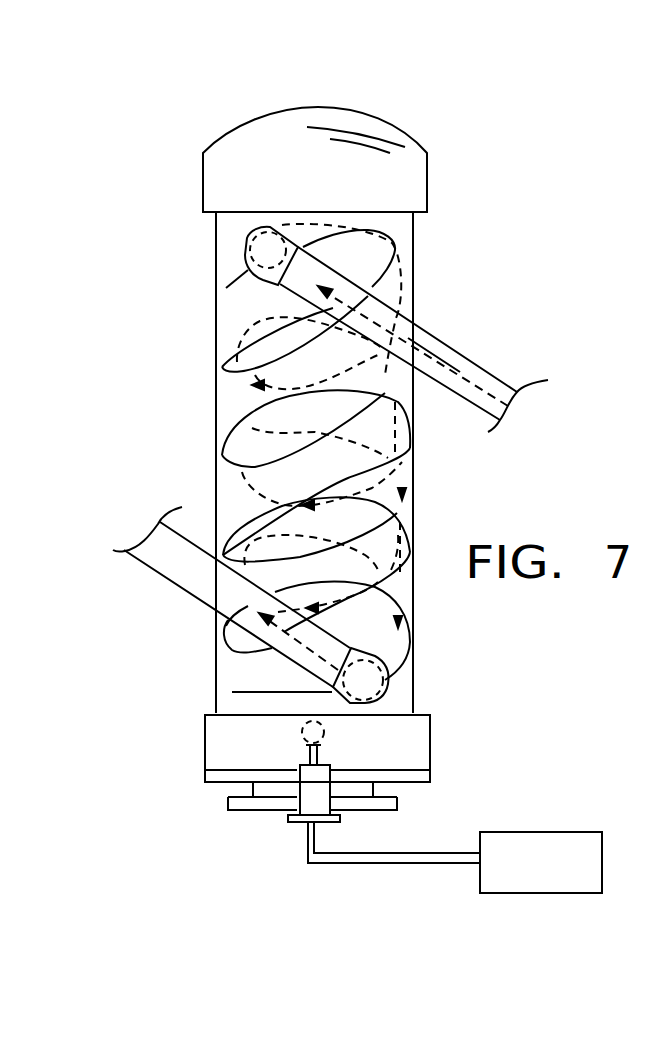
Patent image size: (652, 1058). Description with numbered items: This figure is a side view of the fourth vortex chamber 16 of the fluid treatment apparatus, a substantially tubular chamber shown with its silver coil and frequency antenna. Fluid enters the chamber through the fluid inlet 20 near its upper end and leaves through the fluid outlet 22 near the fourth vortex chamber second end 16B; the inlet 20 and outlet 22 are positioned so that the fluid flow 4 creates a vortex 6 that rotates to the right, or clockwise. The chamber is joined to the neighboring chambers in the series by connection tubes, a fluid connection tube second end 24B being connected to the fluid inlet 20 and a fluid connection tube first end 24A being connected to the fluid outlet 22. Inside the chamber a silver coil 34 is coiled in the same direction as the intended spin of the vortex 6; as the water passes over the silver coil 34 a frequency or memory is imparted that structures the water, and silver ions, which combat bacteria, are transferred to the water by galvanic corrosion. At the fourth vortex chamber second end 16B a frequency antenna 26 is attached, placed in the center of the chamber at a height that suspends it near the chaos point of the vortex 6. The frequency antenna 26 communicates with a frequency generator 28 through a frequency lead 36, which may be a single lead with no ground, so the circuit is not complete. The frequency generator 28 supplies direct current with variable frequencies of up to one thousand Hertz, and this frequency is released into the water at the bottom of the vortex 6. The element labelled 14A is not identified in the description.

The fluid flow 4 is at (408, 338).
The vortex 6 is at (300, 703).
The upper end cap 14A is at (415, 233).
The fourth vortex chamber 16 is at (413, 470).
The fourth vortex chamber second end 16B is at (413, 697).
The fluid inlet 20 is at (246, 250).
The fluid outlet 22 is at (375, 685).
The fluid connection tube first end 24A is at (220, 630).
The fluid connection tube second end 24B is at (404, 320).
The frequency antenna 26 is at (306, 738).
The frequency generator 28 is at (567, 882).
The silver coil 34 is at (232, 430).
The frequency lead 36 is at (393, 850).